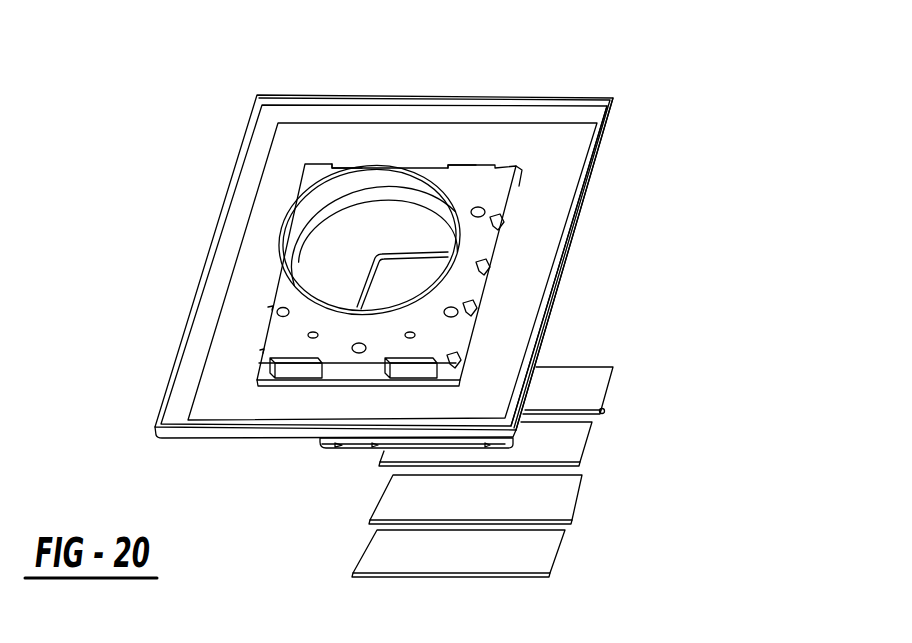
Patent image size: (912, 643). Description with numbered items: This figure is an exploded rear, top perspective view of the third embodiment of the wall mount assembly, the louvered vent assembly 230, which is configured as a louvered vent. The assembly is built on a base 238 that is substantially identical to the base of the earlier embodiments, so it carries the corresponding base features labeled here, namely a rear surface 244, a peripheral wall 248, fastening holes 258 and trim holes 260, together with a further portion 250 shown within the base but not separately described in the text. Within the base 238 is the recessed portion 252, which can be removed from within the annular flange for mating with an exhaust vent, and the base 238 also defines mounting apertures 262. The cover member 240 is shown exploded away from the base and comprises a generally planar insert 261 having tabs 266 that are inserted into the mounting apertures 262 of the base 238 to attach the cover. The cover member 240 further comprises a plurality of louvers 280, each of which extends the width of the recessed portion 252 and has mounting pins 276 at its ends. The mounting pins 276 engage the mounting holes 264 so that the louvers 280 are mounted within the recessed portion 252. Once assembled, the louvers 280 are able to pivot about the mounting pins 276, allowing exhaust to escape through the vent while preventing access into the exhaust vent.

The louvered vent assembly 230 is at (748, 160).
The base 238 is at (560, 165).
The bottom wall of housing 244 is at (578, 142).
The side wall of housing 248 is at (589, 192).
The mounting plate 250 is at (493, 247).
The recessed portion 252 is at (487, 182).
The mounting apertures 262 is at (472, 167).
The mounting holes 264 is at (500, 221).
The apertures 258 is at (283, 313).
The locating pins 260 is at (410, 335).
The tabs 266 is at (353, 446).
The planar insert 261 is at (395, 447).
The cover member 240 is at (655, 455).
The mounting pins 276 is at (570, 519).
The louvers 280 is at (575, 432).